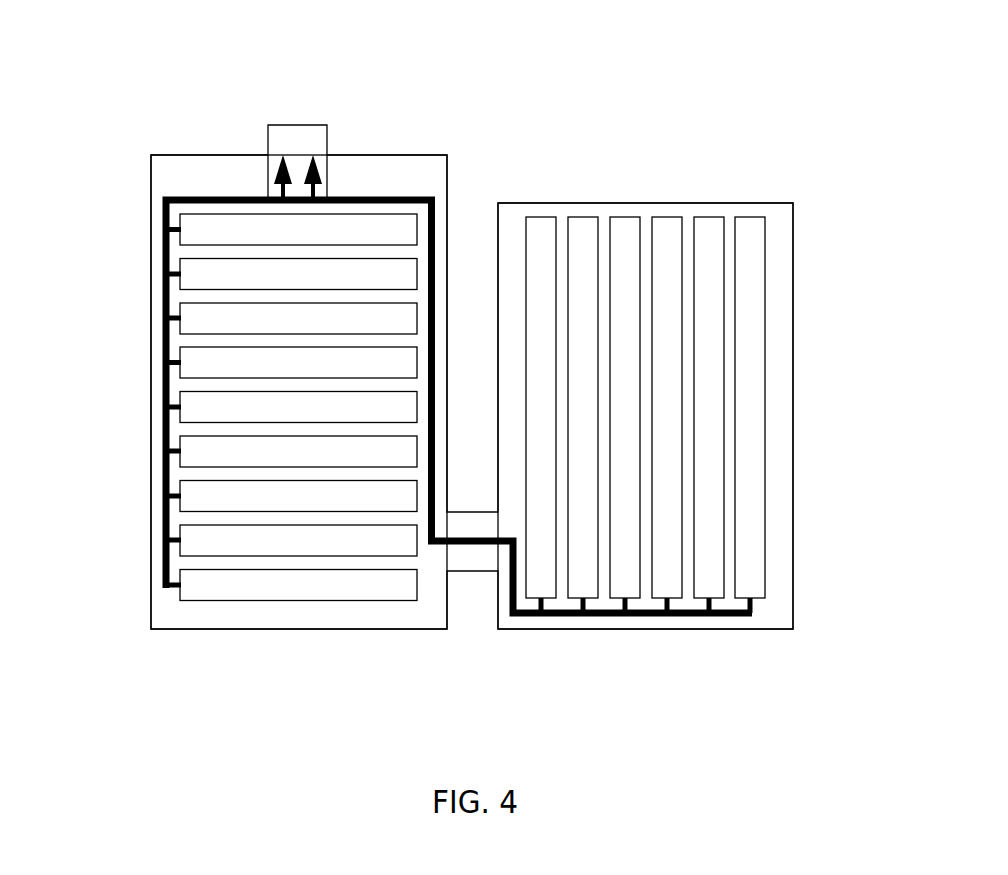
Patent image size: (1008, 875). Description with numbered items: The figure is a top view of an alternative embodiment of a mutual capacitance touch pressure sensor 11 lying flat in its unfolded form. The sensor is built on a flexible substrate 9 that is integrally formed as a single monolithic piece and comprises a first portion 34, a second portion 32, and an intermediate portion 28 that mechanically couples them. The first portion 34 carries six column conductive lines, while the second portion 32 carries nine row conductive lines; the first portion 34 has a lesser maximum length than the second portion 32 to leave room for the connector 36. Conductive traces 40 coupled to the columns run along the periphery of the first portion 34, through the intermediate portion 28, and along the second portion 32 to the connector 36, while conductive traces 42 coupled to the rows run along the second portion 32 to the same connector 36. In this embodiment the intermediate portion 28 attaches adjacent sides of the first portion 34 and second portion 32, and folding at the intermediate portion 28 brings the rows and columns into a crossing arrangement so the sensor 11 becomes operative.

The mutual capacitance touch pressure sensor 11 is at (206, 75).
The flexible substrate 9 is at (141, 169).
The second portion 32 is at (151, 304).
The first portion 34 is at (793, 391).
The connector 36 is at (327, 124).
The conductive traces 40 is at (433, 228).
The conductive traces 42 is at (163, 254).
The intermediate portion 28 is at (478, 556).